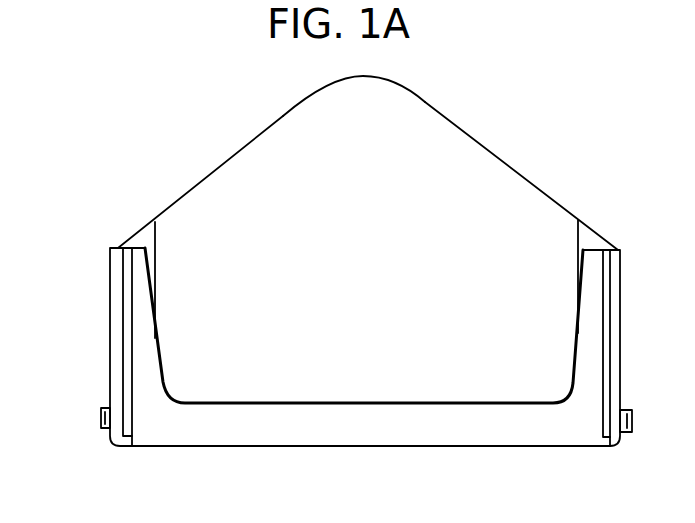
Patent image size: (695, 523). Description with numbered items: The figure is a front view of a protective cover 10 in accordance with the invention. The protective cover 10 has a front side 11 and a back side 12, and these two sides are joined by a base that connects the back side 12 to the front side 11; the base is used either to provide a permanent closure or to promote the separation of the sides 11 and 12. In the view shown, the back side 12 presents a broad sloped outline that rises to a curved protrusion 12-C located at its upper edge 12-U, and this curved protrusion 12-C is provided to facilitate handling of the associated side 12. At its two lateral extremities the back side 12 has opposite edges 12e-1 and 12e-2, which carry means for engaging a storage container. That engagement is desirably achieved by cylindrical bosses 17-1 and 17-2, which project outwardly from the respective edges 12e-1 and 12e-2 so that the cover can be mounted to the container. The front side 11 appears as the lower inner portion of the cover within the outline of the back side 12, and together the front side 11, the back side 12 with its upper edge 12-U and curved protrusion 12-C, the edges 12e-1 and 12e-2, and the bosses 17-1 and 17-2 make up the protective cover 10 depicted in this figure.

The protective cover 10 is at (142, 204).
The front side 11 is at (410, 413).
The back side 12 is at (538, 205).
The upper edge 12-U is at (225, 160).
The curved protrusion 12-C is at (392, 80).
The edge 12e-1 is at (110, 298).
The edge 12e-2 is at (613, 302).
The cylindrical boss 17-1 is at (101, 421).
The cylindrical boss 17-2 is at (633, 422).